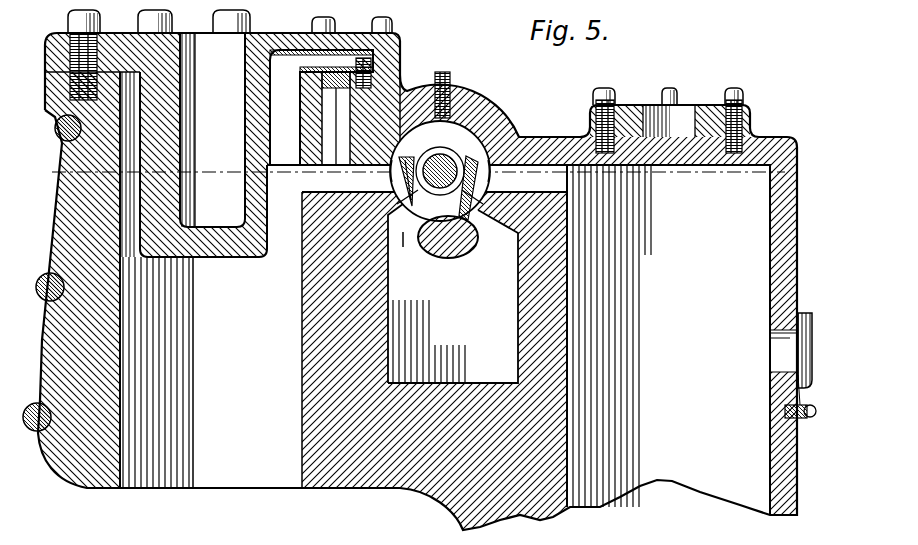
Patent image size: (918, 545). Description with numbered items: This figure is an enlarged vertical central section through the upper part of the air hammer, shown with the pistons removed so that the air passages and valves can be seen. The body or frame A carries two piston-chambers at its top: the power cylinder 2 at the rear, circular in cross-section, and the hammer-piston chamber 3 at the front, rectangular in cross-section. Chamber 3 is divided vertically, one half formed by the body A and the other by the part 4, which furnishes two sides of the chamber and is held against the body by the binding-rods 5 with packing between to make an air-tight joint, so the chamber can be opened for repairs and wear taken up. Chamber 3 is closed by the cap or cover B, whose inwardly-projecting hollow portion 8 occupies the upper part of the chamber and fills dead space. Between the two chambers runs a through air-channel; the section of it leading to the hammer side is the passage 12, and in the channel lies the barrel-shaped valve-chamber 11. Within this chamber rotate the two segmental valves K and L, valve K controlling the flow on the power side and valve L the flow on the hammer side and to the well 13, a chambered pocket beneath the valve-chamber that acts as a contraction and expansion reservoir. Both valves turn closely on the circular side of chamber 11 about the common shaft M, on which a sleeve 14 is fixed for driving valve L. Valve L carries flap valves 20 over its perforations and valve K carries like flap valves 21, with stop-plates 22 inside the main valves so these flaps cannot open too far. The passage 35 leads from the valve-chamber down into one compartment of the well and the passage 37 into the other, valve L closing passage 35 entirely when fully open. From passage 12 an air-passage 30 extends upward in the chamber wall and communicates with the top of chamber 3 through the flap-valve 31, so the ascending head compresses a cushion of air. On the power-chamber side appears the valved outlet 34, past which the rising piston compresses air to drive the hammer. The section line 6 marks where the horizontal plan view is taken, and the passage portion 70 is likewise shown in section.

The power cylinder 2 is at (668, 340).
The hammer-piston chamber 3 is at (211, 340).
The chamber section 4 is at (60, 226).
The binding-rods 5 is at (55, 136).
The section line 6 is at (410, 175).
The inwardly-projecting hollow portion 8 is at (212, 130).
The valve-chamber 11 is at (434, 145).
The air-passage 12 is at (331, 179).
The well 13 is at (453, 293).
The sleeve 14 is at (460, 150).
The flap valves 20 is at (392, 176).
The flap valves 21 is at (486, 183).
The stop-plates 22 is at (408, 173).
The air-passage 30 is at (336, 131).
The flap-valve 31 is at (331, 55).
The valved outlet 34 is at (771, 356).
The passage 35 is at (404, 250).
The passage 37 is at (463, 237).
The passage 70 is at (526, 179).
The body or frame A is at (407, 492).
The cap or cover B is at (222, 133).
The rotating valve K is at (461, 209).
The rotating valve L is at (408, 187).
The shaft M is at (441, 156).